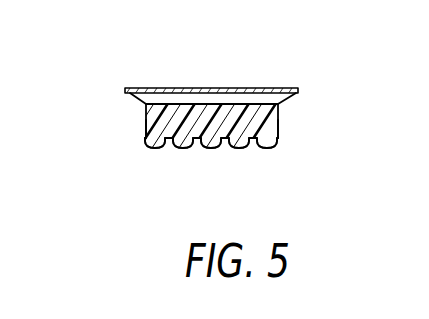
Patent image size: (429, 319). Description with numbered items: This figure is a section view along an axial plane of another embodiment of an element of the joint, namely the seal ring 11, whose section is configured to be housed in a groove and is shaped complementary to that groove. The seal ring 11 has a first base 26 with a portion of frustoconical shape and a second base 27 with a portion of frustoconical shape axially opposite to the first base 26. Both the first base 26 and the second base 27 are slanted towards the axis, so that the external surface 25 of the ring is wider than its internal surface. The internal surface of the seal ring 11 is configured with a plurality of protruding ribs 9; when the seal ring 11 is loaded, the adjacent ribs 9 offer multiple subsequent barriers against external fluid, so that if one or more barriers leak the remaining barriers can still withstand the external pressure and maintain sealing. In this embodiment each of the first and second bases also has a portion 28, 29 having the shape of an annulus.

The external surface 25 is at (261, 88).
The seal ring 11 is at (277, 119).
The first base 26 is at (138, 93).
The second base 27 is at (287, 97).
The annulus-shaped portion of the first base 28 is at (148, 138).
The annulus-shaped portion of the second base 29 is at (277, 135).
The protruding ribs 9 is at (170, 147).